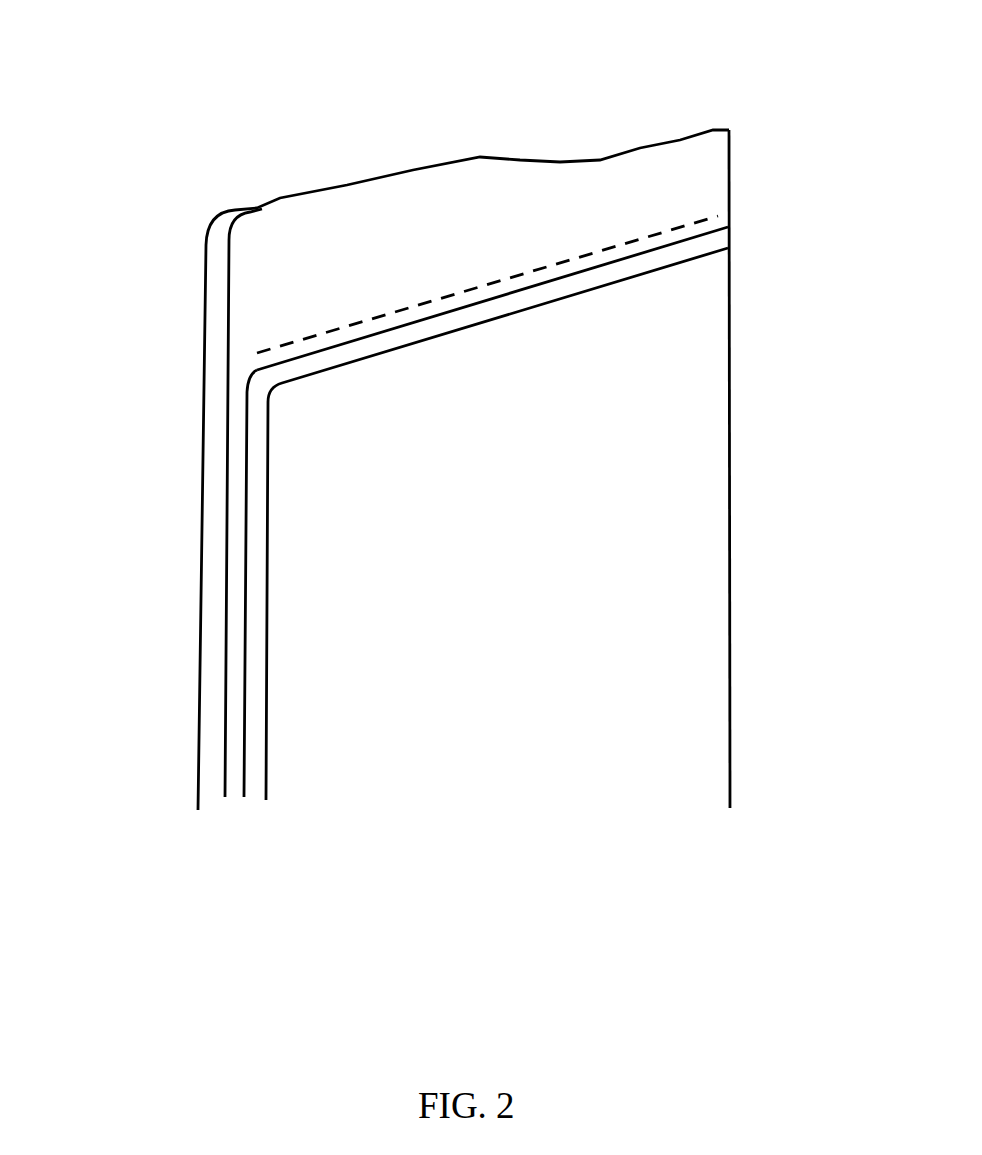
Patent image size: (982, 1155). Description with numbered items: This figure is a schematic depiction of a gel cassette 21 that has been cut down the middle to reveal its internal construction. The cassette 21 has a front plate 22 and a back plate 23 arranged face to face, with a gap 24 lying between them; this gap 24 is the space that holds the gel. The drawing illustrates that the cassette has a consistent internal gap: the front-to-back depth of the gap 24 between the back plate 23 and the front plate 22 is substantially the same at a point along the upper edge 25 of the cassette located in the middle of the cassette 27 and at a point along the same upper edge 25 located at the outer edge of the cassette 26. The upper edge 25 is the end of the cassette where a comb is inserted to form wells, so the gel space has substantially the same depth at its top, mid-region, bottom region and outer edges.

The cassette 21 is at (463, 436).
The front plate 22 is at (683, 358).
The back plate 23 is at (278, 280).
The gap 24 is at (237, 420).
The upper edge 25 is at (508, 263).
The outer edge of the cassette 26 is at (729, 225).
The middle of the cassette 27 is at (253, 367).